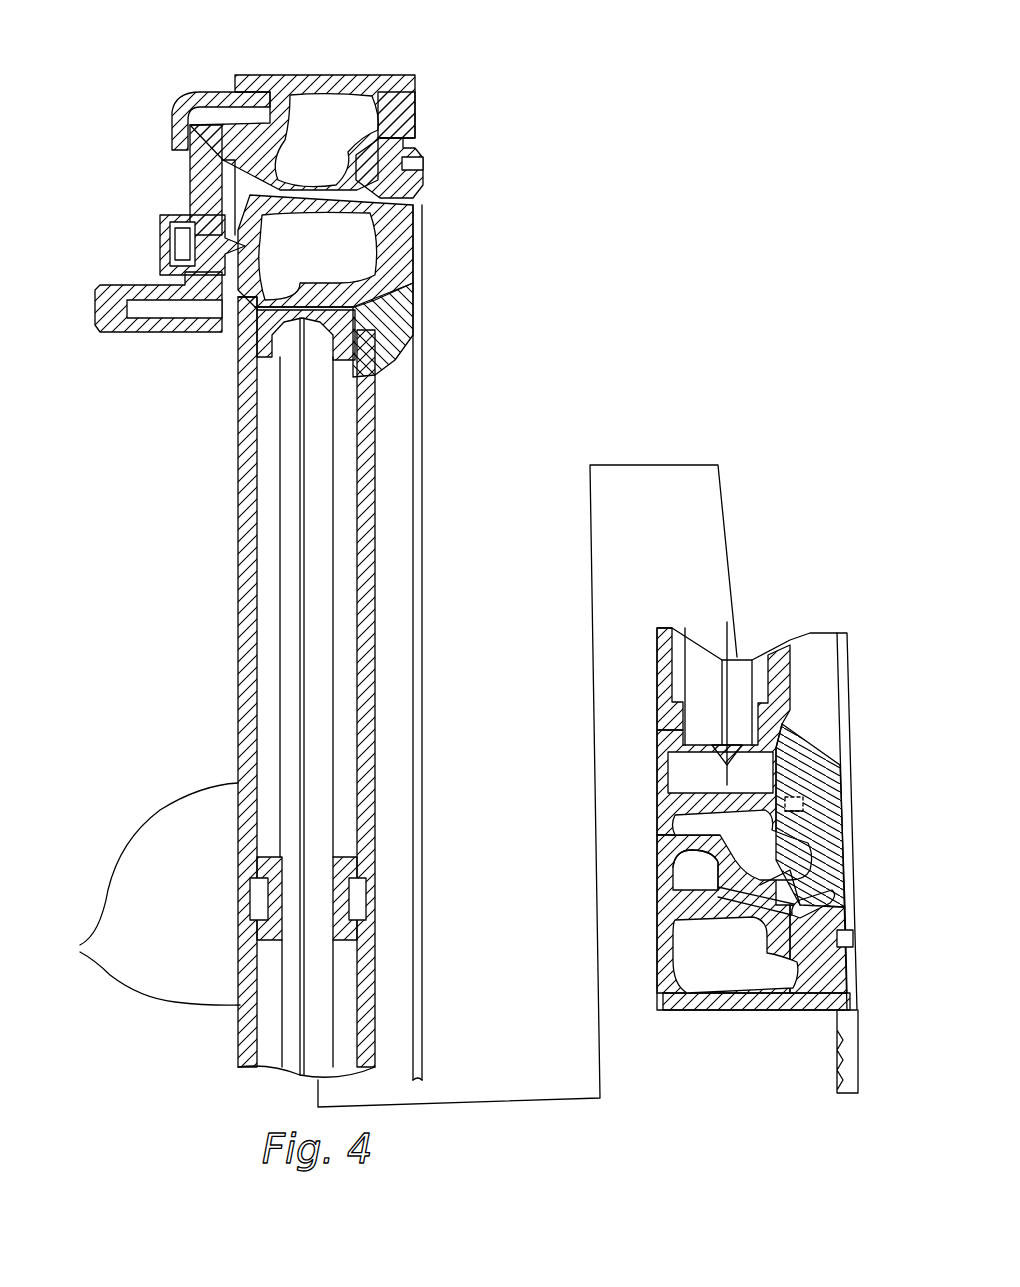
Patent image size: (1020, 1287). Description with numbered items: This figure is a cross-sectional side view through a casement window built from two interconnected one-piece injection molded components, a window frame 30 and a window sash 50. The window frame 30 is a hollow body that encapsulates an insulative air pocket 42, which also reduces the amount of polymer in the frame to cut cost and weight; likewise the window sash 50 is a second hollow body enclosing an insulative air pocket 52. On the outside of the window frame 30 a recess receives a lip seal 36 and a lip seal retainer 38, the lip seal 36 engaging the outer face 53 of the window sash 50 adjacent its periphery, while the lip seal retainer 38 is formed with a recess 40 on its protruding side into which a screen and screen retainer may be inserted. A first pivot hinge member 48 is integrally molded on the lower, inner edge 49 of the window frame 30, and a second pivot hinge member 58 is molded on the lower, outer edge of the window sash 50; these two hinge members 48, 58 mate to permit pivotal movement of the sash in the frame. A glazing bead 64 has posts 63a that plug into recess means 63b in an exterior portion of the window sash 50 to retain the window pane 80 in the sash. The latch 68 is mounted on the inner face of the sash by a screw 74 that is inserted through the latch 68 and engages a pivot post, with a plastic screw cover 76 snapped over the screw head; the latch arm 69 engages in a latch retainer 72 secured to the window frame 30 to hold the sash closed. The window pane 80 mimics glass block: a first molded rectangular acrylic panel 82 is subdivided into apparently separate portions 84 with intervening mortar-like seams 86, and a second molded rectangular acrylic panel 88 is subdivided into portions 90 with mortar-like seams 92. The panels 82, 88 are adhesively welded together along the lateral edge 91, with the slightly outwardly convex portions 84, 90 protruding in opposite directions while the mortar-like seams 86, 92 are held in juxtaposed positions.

The window frame 30 is at (250, 66).
The insulative air pocket 42 is at (328, 95).
The outer face 53 is at (372, 130).
The lip seal 36 is at (362, 165).
The lip seal retainer 38 is at (418, 150).
The recess 40 is at (426, 168).
The latch retainer 72 is at (180, 105).
The latch arm 69 is at (185, 158).
The screw 74 is at (170, 252).
The plastic screw cover 76 is at (165, 233).
The latch 68 is at (90, 334).
The window sash 50 is at (440, 264).
The glazing bead 64 is at (392, 348).
The insulative air pocket 52 is at (238, 330).
The second molded rectangular acrylic panel 88 is at (245, 395).
The window pane 80 is at (222, 548).
The first molded rectangular acrylic panel 82 is at (372, 478).
The lateral edge 91 is at (295, 470).
The apparently separate portions 84 is at (377, 985).
The mortar-like seams 86 is at (347, 897).
The mortar-like seams 92 is at (248, 898).
The apparently separate portions 90 is at (139, 894).
The second pivot hinge member 58 is at (697, 857).
The first pivot hinge member 48 is at (697, 863).
The lower, inner edge 49 is at (795, 870).
The posts 63a is at (795, 800).
The recess means 63b is at (800, 812).